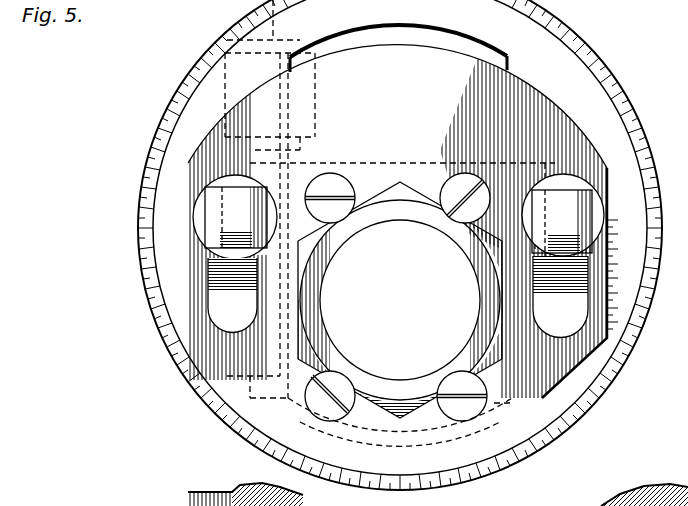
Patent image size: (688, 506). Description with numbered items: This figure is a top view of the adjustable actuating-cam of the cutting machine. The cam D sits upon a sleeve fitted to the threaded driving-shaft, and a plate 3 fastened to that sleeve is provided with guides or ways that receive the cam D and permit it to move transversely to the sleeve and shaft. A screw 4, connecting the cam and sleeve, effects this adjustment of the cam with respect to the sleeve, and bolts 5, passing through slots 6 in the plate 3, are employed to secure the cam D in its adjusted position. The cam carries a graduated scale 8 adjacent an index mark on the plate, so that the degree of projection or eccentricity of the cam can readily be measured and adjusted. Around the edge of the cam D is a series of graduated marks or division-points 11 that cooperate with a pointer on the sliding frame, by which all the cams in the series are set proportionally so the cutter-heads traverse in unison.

The plate 3 is at (397, 221).
The screw 4 is at (277, 25).
The bolts 5 is at (398, 216).
The slots 6 is at (398, 297).
The graduated scale 8 is at (616, 274).
The graduated marks or division-points 11 is at (551, 425).
The cam D is at (419, 55).